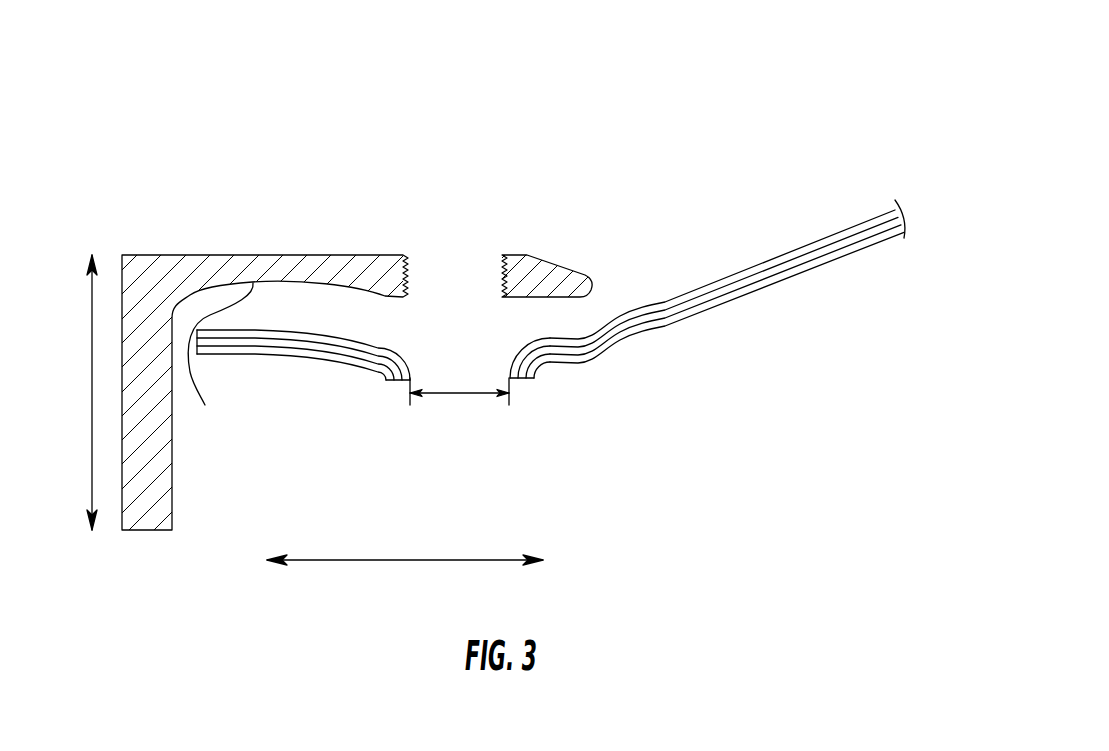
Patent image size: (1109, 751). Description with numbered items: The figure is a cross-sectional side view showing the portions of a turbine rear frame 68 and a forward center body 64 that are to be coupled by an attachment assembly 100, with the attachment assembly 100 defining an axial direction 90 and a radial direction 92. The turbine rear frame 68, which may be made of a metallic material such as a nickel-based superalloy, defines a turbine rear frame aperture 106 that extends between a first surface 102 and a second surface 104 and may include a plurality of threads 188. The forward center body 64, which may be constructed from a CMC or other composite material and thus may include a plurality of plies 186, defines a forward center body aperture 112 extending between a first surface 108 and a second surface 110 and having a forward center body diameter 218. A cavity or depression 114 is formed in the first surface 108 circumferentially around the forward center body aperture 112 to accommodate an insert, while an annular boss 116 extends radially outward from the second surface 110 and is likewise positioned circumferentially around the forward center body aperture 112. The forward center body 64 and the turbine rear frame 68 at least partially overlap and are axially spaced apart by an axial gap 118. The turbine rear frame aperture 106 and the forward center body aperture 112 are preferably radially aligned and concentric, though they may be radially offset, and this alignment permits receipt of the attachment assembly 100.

The attachment assembly 100 is at (288, 85).
The first surface 102 is at (232, 255).
The second surface 104 is at (220, 363).
The turbine rear frame aperture 106 is at (453, 260).
The first surface 108 is at (715, 292).
The second surface 110 is at (753, 297).
The forward center body aperture 112 is at (462, 380).
The depression 114 is at (326, 330).
The annular boss 116 is at (393, 380).
The axial gap 118 is at (598, 310).
The plies 186 is at (873, 220).
The threads 188 is at (500, 263).
The forward center body diameter 218 is at (430, 393).
The forward center body 64 is at (283, 380).
The turbine rear frame 68 is at (168, 233).
The axial direction 90 is at (92, 387).
The radial direction 92 is at (413, 560).